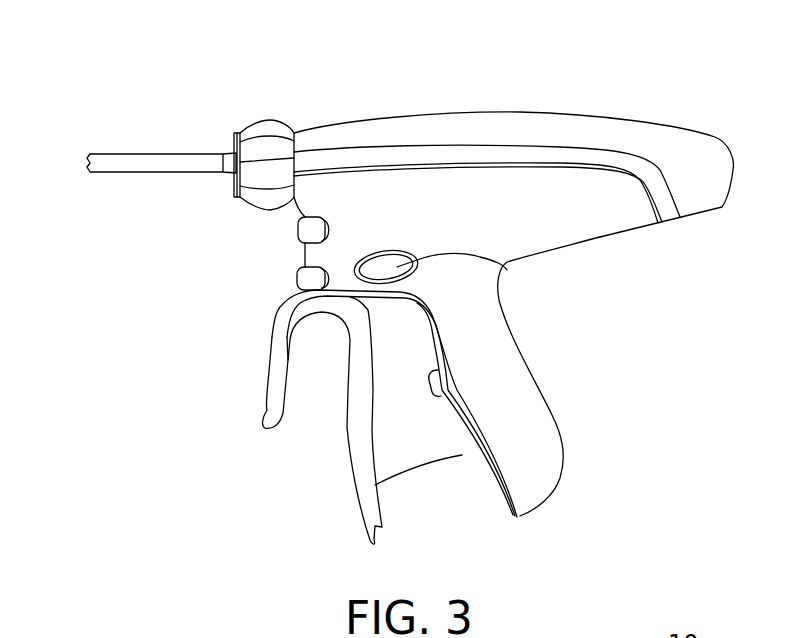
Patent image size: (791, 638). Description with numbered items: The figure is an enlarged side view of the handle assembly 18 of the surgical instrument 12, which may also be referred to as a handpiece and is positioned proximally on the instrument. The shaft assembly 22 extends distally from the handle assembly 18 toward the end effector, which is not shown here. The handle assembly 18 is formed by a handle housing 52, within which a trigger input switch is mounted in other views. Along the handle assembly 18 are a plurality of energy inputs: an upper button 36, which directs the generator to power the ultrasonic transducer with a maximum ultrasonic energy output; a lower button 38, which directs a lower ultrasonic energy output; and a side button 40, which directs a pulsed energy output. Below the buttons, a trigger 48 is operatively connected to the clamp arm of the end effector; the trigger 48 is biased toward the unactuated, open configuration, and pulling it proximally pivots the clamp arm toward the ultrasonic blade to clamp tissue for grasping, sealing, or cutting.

The surgical instrument 12 is at (677, 84).
The handle assembly 18 is at (713, 139).
The shaft assembly 22 is at (138, 153).
The upper button 36 is at (297, 228).
The lower button 38 is at (297, 278).
The side button 40 is at (503, 263).
The trigger 48 is at (275, 404).
The handle housing 52 is at (595, 218).